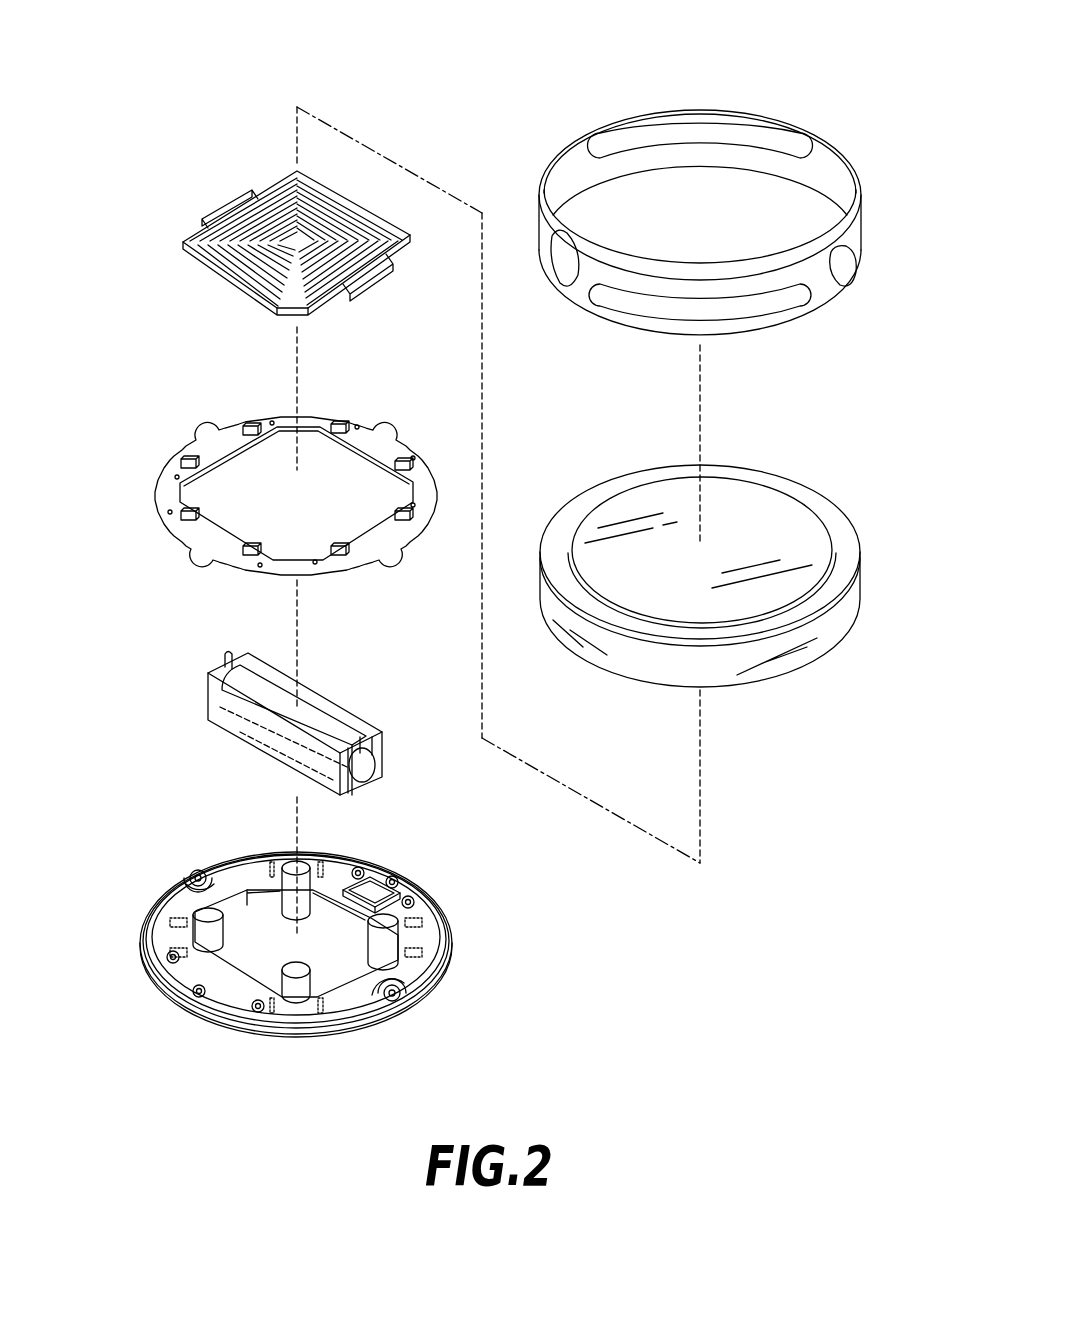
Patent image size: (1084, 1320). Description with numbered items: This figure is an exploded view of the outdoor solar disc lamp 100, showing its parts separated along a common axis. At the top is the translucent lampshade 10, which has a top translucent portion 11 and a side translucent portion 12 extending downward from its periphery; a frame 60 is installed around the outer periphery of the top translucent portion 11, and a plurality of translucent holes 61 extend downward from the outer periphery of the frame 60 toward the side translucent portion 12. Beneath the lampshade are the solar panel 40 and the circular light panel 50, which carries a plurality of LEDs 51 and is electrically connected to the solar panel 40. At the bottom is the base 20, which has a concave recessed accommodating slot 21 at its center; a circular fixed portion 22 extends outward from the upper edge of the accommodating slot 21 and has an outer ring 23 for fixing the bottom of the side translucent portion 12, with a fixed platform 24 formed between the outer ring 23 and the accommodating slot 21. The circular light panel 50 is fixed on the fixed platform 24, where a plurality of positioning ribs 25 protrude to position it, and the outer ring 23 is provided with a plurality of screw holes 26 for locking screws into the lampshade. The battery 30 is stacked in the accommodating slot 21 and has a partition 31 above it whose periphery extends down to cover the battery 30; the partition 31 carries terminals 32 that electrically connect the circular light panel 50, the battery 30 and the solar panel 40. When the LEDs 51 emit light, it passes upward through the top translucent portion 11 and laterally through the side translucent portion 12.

The outdoor solar disc lamp 100 is at (183, 81).
The solar panel 40 is at (227, 207).
The frame 60 is at (698, 234).
The translucent holes 61 is at (557, 260).
The circular light panel 50 is at (280, 481).
The LEDs 51 is at (340, 425).
The translucent lampshade 10 is at (727, 566).
The top translucent portion 11 is at (783, 508).
The side translucent portion 12 is at (847, 613).
The battery 30 is at (303, 707).
The partition 31 is at (333, 700).
The terminals 32 is at (230, 650).
The base 20 is at (305, 952).
The accommodating slot 21 is at (321, 935).
The fixed portion 22 is at (447, 978).
The outer ring 23 is at (450, 935).
The fixed platform 24 is at (162, 940).
The positioning ribs 25 is at (168, 922).
The screw holes 26 is at (198, 870).